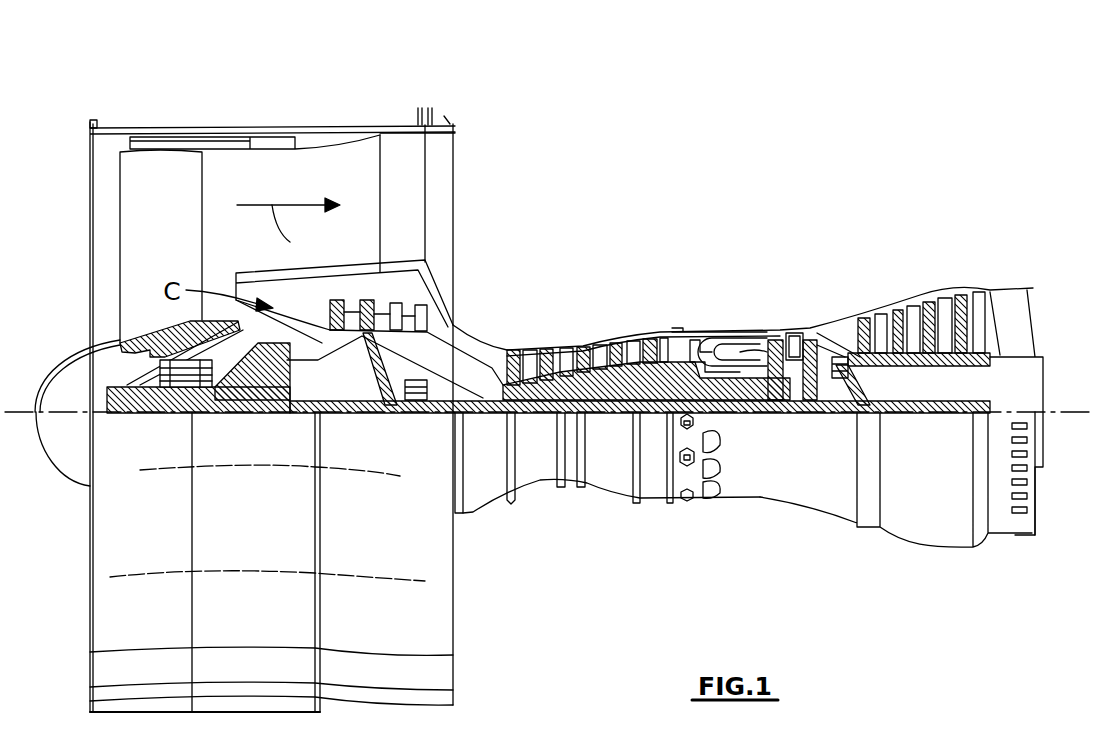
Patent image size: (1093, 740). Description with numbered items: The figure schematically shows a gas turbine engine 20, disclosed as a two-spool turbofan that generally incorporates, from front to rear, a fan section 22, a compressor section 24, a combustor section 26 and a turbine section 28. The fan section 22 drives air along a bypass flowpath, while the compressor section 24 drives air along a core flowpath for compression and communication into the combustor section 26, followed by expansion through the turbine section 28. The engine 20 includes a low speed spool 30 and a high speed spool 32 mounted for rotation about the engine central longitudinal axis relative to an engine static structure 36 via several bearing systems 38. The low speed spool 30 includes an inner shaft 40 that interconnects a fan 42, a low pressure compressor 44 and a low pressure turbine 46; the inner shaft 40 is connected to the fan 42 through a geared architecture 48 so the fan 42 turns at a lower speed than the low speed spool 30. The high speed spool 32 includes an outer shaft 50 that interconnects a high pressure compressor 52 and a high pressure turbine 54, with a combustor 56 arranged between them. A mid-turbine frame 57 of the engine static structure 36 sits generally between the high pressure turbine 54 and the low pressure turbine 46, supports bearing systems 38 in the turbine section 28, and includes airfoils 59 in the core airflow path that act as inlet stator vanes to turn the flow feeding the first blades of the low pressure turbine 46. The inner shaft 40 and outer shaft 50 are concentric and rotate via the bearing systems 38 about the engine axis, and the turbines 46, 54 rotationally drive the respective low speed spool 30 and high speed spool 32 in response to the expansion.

The gas turbine engine 20 is at (731, 178).
The fan section 22 is at (200, 124).
The compressor section 24 is at (500, 322).
The combustor section 26 is at (727, 332).
The turbine section 28 is at (870, 270).
The low speed spool 30 is at (612, 415).
The high speed spool 32 is at (658, 360).
The engine static structure 36 is at (652, 500).
The bearing systems 38 is at (183, 382).
The inner shaft 40 is at (473, 415).
The fan 42 is at (177, 257).
The low pressure compressor 44 is at (395, 300).
The low pressure turbine 46 is at (914, 312).
The geared architecture 48 is at (278, 393).
The outer shaft 50 is at (735, 414).
The high pressure compressor 52 is at (588, 357).
The high pressure turbine 54 is at (794, 333).
The combustor 56 is at (727, 350).
The mid-turbine frame 57 is at (834, 323).
The airfoils 59 is at (838, 345).